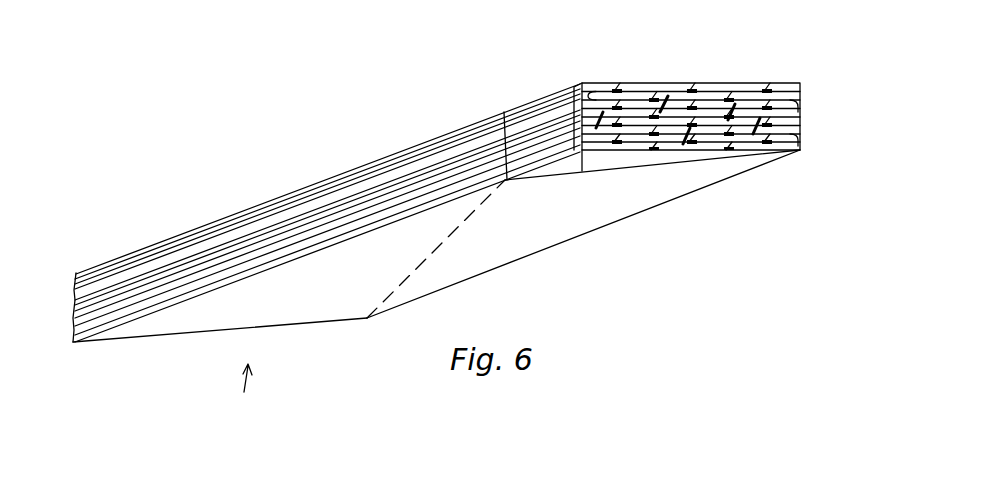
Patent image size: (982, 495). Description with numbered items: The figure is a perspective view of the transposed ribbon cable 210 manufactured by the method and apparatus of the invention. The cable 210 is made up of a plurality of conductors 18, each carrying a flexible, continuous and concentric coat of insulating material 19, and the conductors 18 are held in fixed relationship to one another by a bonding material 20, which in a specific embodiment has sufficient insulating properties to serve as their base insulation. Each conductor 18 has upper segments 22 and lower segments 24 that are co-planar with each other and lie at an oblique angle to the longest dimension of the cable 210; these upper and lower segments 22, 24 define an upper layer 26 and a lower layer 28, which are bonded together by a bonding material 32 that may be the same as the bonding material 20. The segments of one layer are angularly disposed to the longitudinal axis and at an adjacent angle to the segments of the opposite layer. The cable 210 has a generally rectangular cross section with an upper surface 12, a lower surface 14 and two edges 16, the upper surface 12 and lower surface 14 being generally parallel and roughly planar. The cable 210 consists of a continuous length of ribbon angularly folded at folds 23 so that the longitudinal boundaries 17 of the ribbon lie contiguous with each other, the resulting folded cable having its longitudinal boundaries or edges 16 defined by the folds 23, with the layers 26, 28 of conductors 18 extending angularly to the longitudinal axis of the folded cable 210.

The upper surface 12 is at (462, 126).
The lower surface 14 is at (545, 235).
The edges 16 is at (250, 232).
The longitudinal boundaries 17 is at (226, 328).
The conductors 18 is at (750, 87).
The coat of insulating material 19 is at (617, 82).
The bonding material 20 is at (212, 245).
The upper segments 22 is at (662, 98).
The folds 23 is at (167, 297).
The lower segments 24 is at (695, 152).
The upper layer 26 is at (388, 152).
The lower layer 28 is at (437, 275).
The bonding material 32 is at (345, 213).
The transposed ribbon cable 210 is at (243, 390).